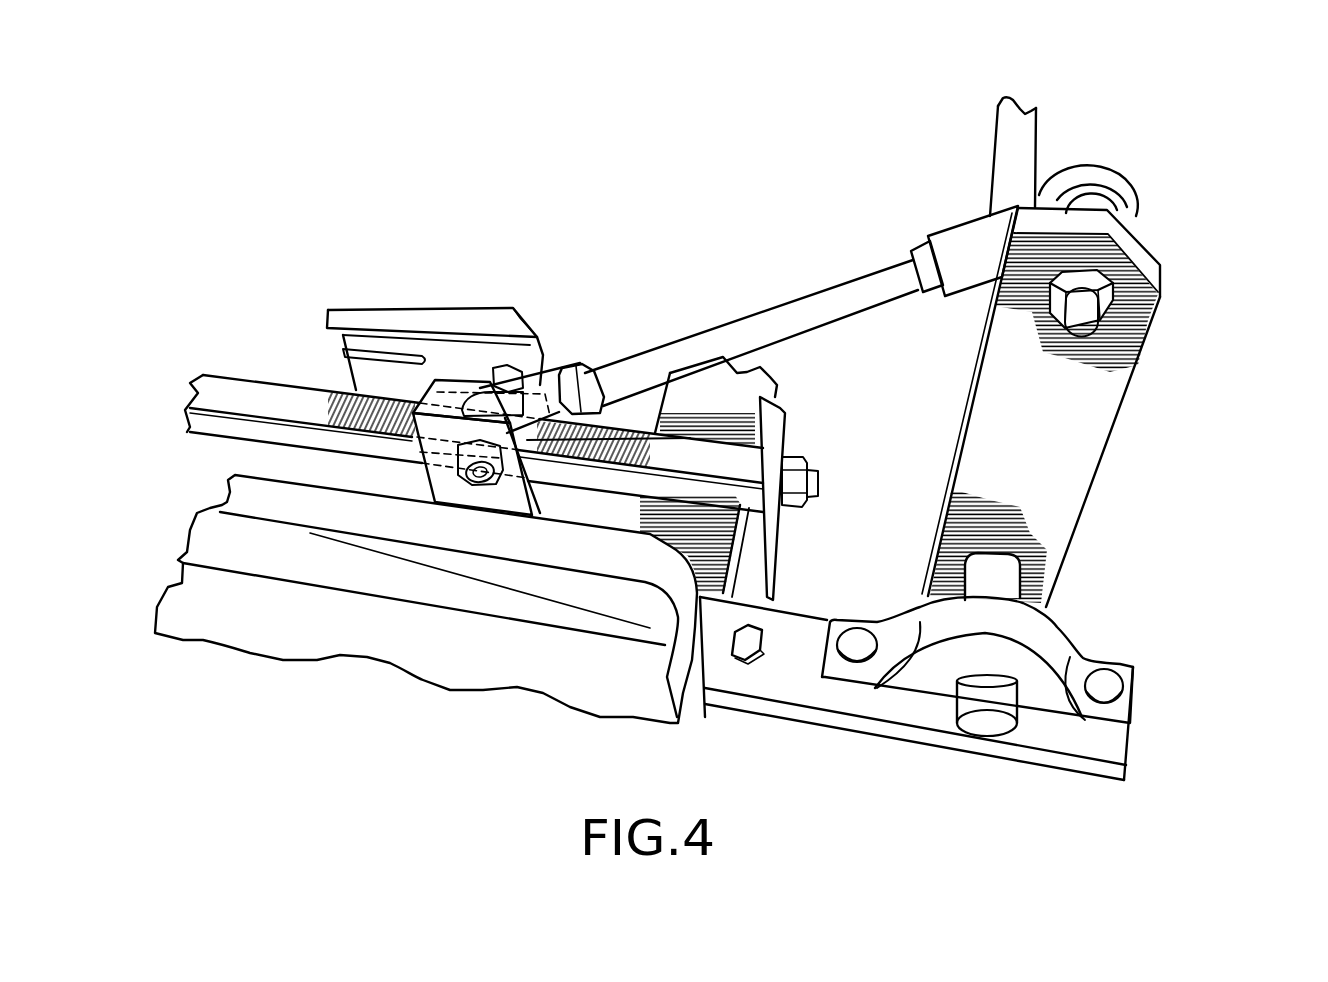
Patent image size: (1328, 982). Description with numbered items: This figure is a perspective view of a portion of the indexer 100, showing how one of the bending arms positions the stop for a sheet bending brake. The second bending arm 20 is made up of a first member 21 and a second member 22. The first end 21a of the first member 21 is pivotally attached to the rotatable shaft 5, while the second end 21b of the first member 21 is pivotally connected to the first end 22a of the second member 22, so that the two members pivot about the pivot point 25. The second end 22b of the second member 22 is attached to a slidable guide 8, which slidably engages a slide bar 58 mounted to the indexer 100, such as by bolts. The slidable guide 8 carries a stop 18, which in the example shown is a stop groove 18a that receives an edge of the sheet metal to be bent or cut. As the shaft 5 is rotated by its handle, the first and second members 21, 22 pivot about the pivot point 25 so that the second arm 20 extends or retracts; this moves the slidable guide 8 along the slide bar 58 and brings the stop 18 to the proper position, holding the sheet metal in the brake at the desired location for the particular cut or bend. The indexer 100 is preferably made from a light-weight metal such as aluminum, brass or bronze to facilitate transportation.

The rotatable shaft 5 is at (1022, 147).
The slidable guide 8 is at (446, 490).
The stop 18 is at (349, 307).
The stop groove 18a is at (320, 353).
The second bending arm 20 is at (1092, 213).
The first member 21 is at (1106, 362).
The first end of first member 21a is at (1048, 583).
The second end of first member 21b is at (1153, 320).
The second member 22 is at (752, 326).
The first end of second member 22a is at (950, 240).
The second end of second member 22b is at (622, 360).
The pivot point 25 is at (1085, 303).
The slide bar 58 is at (215, 403).
The indexer 100 is at (762, 402).